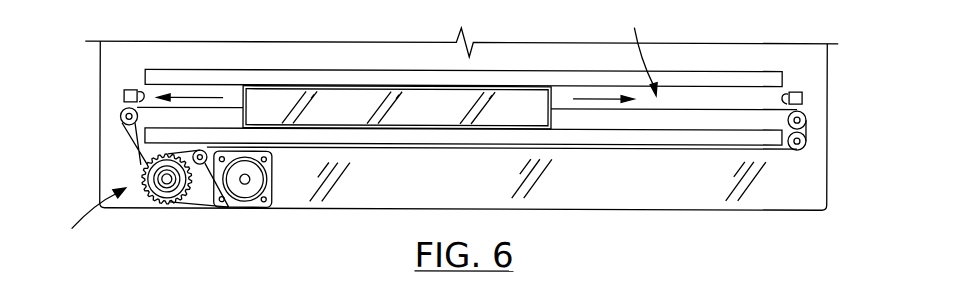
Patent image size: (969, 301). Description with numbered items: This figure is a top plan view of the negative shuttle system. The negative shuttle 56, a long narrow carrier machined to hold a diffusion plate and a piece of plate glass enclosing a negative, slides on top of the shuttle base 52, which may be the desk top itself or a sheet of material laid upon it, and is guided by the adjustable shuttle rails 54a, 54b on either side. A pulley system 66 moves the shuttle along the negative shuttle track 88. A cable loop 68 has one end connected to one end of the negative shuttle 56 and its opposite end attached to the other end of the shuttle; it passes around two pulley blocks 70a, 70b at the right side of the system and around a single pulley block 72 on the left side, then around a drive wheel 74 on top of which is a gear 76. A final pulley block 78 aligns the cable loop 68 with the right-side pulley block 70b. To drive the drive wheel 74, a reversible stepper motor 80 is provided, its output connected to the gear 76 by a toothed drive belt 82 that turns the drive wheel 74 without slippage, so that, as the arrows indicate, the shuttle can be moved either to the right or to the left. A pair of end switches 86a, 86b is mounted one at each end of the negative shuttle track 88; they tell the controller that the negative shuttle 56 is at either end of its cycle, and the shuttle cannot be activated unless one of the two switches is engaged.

The shuttle base 52 is at (797, 188).
The adjustable shuttle rail 54a is at (700, 80).
The adjustable shuttle rail 54b is at (690, 143).
The negative shuttle 56 is at (336, 104).
The pulley system 66 is at (85, 220).
The cable loop 68 is at (140, 162).
The pulley block 70a is at (806, 118).
The pulley block 70b is at (805, 147).
The single pulley block 72 is at (120, 116).
The drive wheel 74 is at (163, 185).
The gear 76 is at (178, 202).
The final pulley block 78 is at (203, 166).
The reversible stepper motor 80 is at (254, 189).
The toothed drive belt 82 is at (230, 208).
The end switch 86a is at (124, 97).
The end switch 86b is at (804, 97).
The negative shuttle track 88 is at (631, 50).